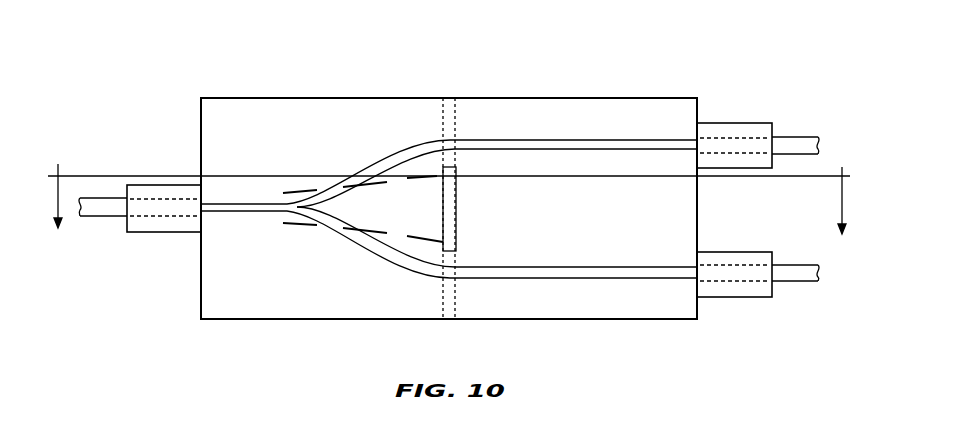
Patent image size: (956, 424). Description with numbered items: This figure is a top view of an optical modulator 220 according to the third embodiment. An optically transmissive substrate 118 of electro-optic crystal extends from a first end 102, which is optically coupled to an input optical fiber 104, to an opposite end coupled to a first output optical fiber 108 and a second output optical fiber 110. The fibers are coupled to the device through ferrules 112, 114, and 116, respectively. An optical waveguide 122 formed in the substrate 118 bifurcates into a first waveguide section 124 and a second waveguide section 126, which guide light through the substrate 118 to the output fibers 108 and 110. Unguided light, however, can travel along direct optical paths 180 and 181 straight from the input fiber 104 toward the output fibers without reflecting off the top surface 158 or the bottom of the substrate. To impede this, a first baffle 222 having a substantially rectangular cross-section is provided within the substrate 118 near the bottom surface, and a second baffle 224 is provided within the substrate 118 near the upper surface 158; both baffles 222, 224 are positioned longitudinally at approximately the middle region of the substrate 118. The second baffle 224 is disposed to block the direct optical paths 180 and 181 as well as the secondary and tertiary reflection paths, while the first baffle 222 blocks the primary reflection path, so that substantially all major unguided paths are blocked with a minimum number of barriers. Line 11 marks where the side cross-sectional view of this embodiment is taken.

The section line 11- 11 is at (450, 209).
The first end 102 is at (205, 306).
The input optical fiber 104 is at (98, 220).
The first output optical fiber 108 is at (797, 136).
The second output optical fiber 110 is at (797, 283).
The ferrule 112 is at (157, 234).
The ferrule 114 is at (733, 122).
The ferrule 116 is at (730, 298).
The optically transmissive substrate 118 is at (207, 106).
The optical waveguide 122 is at (218, 200).
The first waveguide section 124 is at (479, 140).
The second waveguide section 126 is at (553, 279).
The top surface 158 is at (648, 128).
The direct optical path 180 is at (374, 183).
The direct optical path 181 is at (383, 232).
The optical modulator 220 is at (558, 72).
The first baffle 222 is at (448, 321).
The second baffle 224 is at (457, 216).